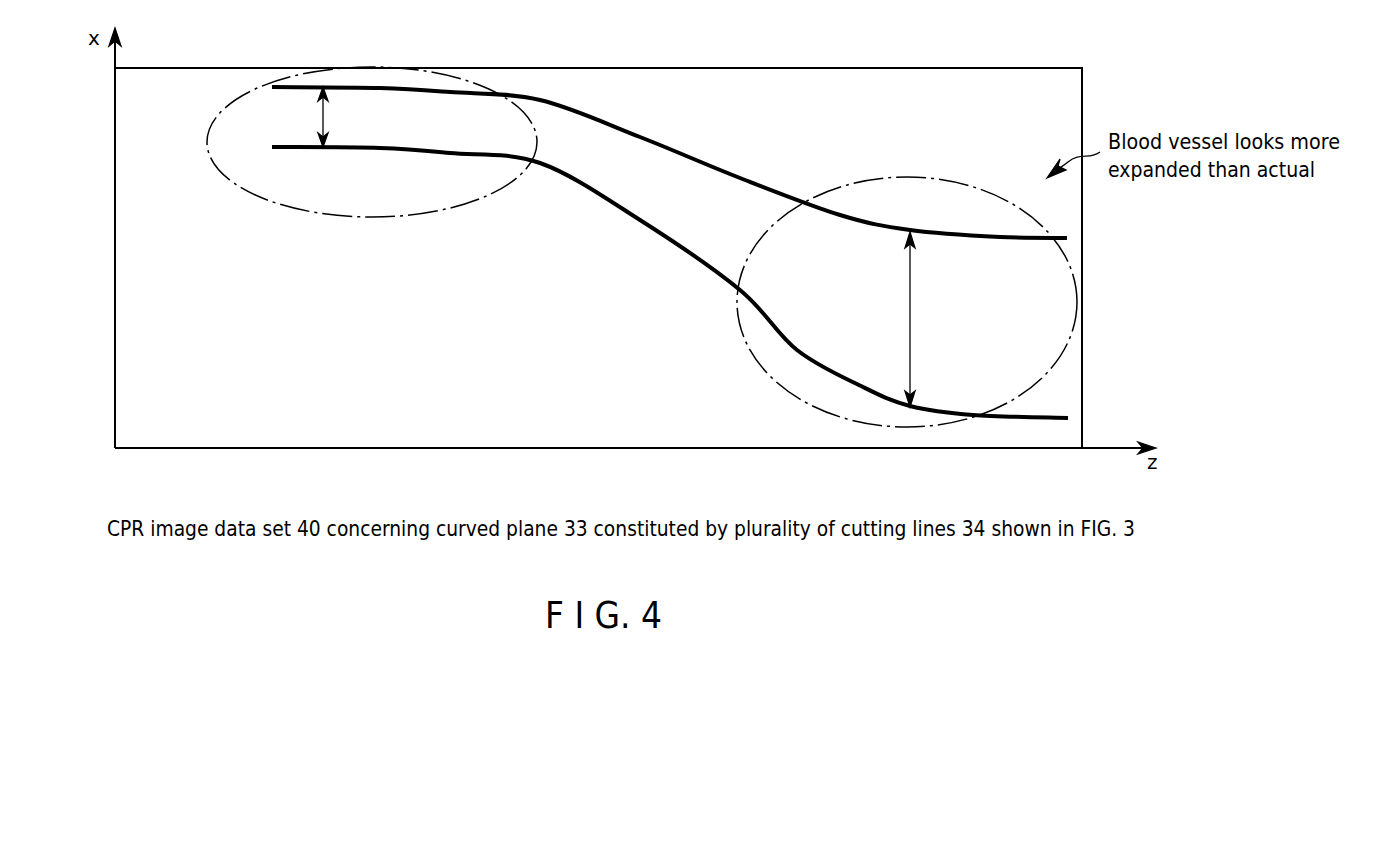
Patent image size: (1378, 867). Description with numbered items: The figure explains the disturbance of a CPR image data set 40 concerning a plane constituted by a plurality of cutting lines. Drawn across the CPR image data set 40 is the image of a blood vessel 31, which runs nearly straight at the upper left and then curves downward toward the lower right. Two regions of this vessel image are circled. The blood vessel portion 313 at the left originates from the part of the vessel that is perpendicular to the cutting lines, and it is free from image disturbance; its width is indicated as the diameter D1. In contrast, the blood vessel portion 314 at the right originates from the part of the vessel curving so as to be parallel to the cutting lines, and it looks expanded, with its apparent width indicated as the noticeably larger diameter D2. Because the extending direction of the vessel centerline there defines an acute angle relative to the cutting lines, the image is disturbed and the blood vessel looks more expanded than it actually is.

The CPR image data set 40 is at (133, 336).
The blood vessel 31 is at (730, 191).
The blood vessel portion 313 is at (372, 218).
The blood vessel portion 314 is at (905, 177).
The blood vessel diameter D1 is at (326, 116).
The blood vessel diameter D2 is at (913, 318).